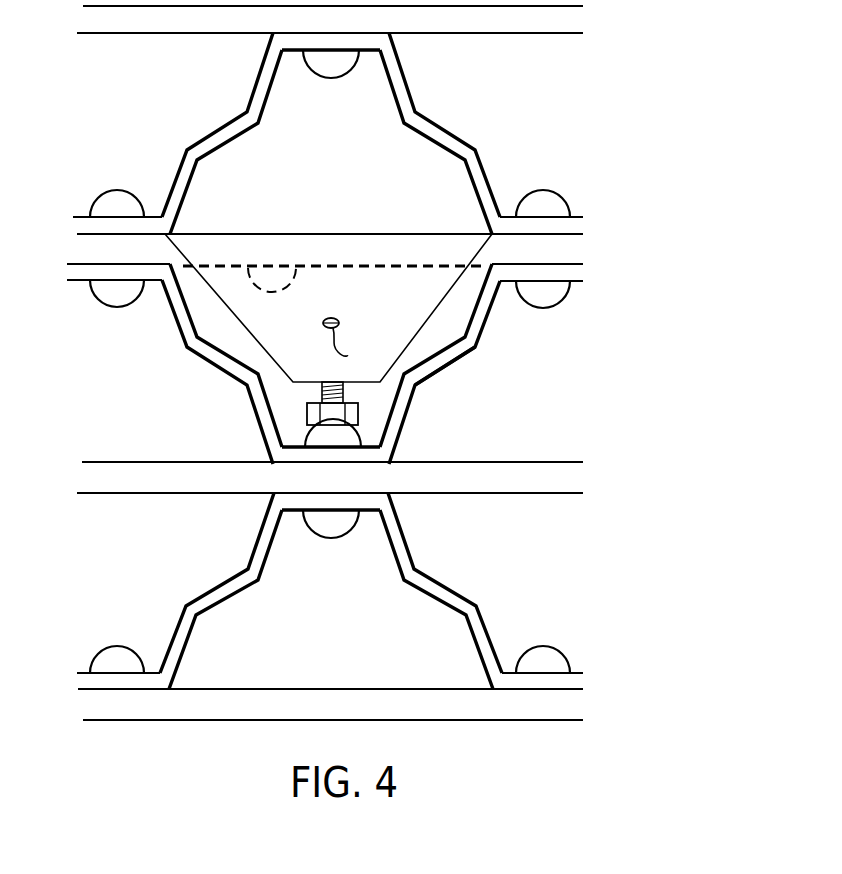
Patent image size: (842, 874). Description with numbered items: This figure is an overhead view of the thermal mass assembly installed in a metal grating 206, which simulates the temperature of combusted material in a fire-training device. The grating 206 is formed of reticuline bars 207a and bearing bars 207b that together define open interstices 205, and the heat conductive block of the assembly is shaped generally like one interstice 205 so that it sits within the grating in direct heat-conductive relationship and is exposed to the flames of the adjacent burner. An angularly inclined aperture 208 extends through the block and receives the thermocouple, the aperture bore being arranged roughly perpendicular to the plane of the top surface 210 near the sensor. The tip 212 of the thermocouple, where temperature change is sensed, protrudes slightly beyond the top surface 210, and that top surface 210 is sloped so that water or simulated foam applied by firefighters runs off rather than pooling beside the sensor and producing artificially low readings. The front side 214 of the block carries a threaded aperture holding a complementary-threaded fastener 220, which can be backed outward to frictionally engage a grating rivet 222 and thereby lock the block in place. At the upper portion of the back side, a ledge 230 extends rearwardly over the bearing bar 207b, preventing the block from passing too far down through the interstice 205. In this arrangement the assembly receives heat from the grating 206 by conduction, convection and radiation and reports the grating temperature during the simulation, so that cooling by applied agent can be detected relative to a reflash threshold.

The interstice 205 is at (442, 337).
The metal grating 206 is at (150, 108).
The reticuline bar 207a is at (432, 362).
The bearing bar 207b is at (520, 249).
The aperture 208 is at (339, 321).
The top surface 210 is at (255, 327).
The tip 212 is at (358, 350).
The front side 214 is at (362, 388).
The fastener 220 is at (307, 411).
The rivet 222 is at (340, 440).
The ledge 230 is at (293, 240).